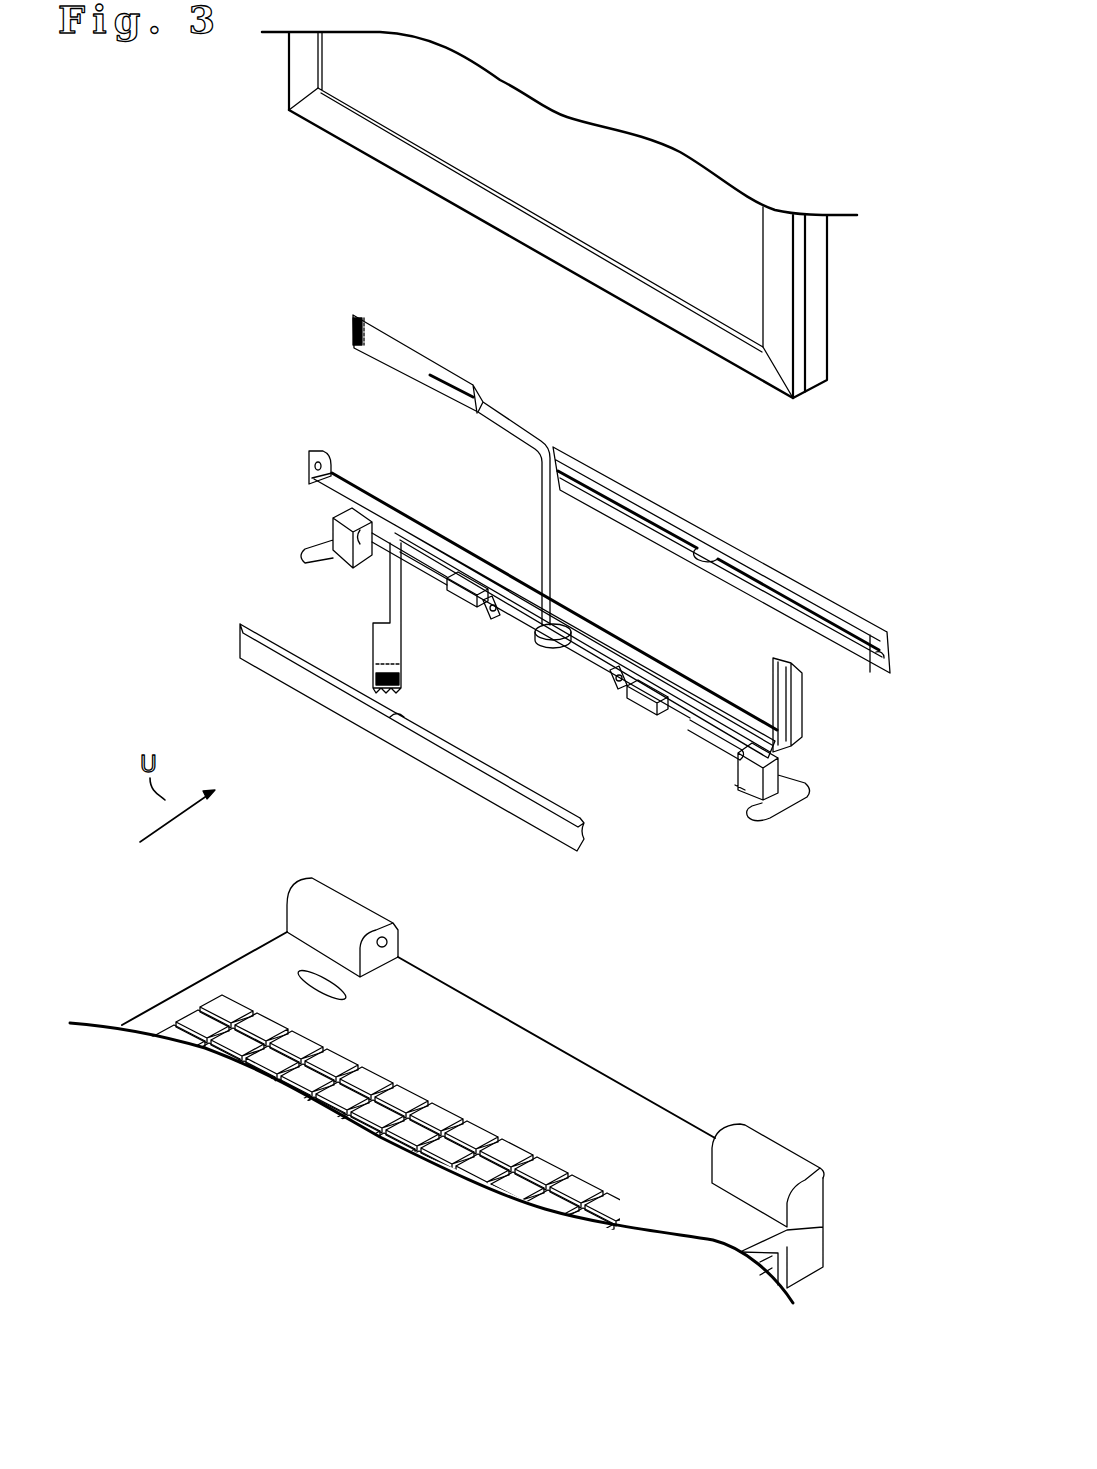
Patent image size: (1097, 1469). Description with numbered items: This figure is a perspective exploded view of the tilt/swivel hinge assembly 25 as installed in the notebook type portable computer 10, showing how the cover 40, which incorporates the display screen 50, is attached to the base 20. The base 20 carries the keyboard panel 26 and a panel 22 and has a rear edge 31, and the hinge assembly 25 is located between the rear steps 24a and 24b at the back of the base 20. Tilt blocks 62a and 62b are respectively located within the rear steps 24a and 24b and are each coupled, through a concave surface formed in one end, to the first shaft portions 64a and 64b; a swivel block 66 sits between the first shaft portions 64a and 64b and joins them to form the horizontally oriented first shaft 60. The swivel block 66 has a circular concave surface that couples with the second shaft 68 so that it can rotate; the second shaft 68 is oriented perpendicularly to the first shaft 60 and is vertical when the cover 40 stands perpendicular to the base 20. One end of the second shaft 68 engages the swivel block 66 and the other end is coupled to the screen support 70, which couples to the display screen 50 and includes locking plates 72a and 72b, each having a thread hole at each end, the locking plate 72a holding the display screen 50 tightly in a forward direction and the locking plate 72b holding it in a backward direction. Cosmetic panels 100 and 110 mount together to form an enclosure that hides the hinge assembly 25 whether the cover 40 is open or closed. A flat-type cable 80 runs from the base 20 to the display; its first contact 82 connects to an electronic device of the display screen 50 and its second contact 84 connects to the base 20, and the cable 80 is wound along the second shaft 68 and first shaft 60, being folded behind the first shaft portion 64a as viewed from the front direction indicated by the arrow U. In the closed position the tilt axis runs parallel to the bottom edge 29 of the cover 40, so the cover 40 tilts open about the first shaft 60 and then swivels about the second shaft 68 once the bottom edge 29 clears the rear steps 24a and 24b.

The portable computer 10 is at (702, 76).
The base 20 is at (481, 1063).
The panel 22 is at (600, 1090).
The rear step 24a is at (338, 905).
The rear step 24b is at (767, 1153).
The tilt/swivel hinge assembly 25 is at (501, 571).
The keyboard panel 26 is at (192, 1020).
The bottom edge 29 is at (693, 342).
The rear edge 31 is at (830, 1195).
The cover 40 is at (331, 153).
The display screen 50 is at (569, 164).
The first shaft 60 is at (512, 665).
The tilt block 62a is at (345, 546).
The tilt block 62b is at (746, 778).
The first shaft portion 64a is at (418, 571).
The first shaft portion 64b is at (707, 735).
The swivel block 66 is at (520, 636).
The second shaft 68 is at (556, 623).
The screen support 70 is at (618, 647).
The locking plate 72a is at (309, 462).
The locking plate 72b is at (773, 665).
The cable 80 is at (401, 449).
The first contact 82 is at (353, 325).
The second contact 84 is at (403, 690).
The cosmetic panel 100 is at (675, 515).
The cosmetic panel 110 is at (318, 690).